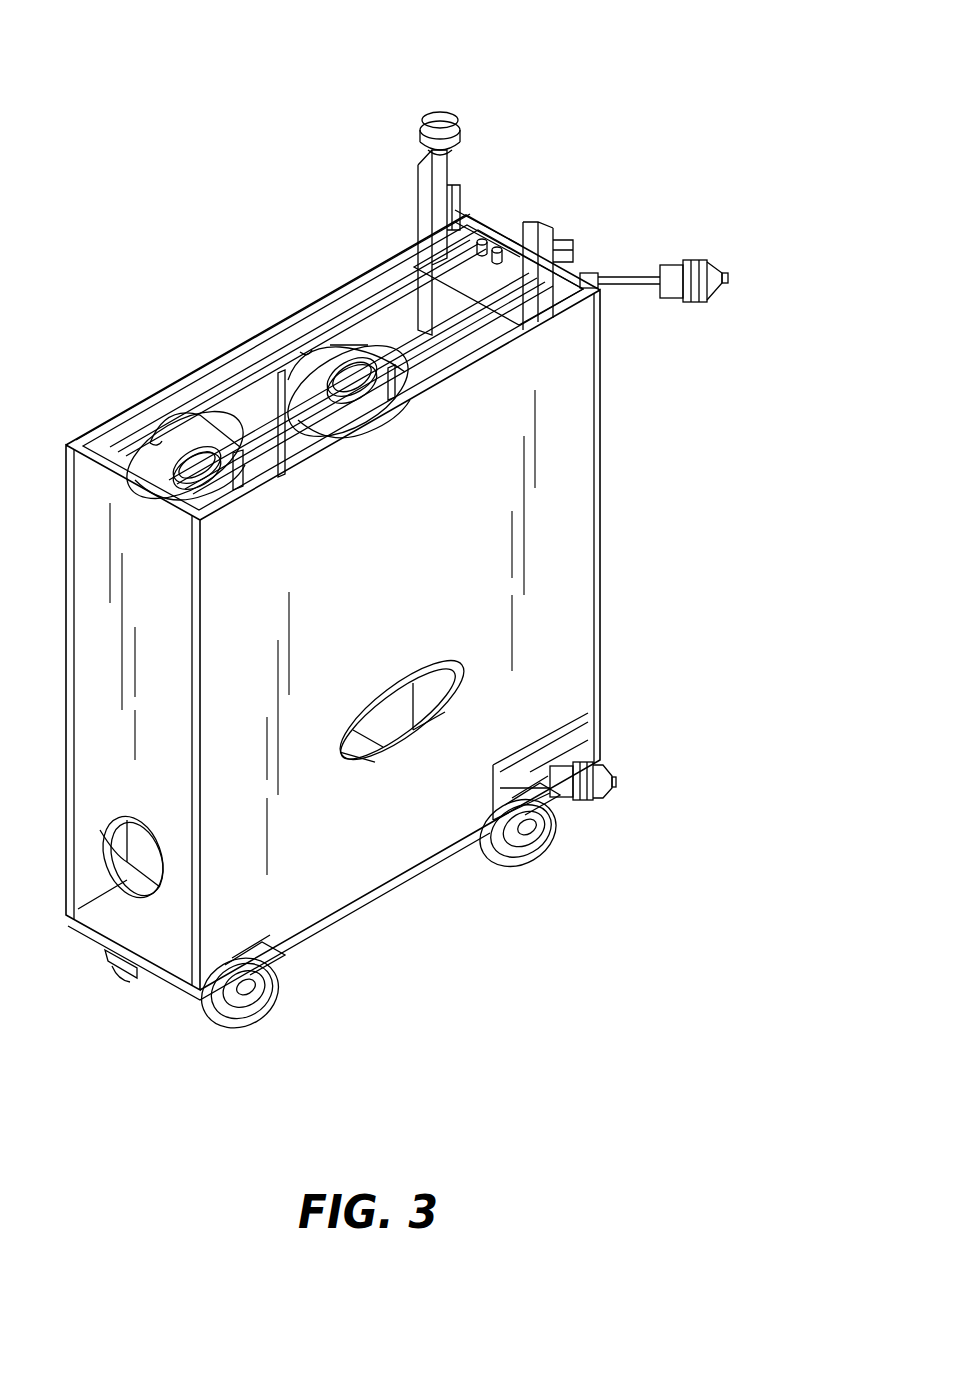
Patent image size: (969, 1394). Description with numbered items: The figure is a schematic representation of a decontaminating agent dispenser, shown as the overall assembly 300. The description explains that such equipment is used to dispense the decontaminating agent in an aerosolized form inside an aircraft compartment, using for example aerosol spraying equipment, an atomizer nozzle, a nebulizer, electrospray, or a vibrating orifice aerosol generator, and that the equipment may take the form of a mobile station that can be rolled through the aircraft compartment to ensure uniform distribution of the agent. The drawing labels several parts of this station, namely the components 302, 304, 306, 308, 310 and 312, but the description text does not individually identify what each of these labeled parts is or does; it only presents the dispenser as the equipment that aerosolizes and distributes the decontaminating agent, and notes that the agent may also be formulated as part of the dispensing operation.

The cart assembly 300 is at (553, 100).
The caster 302 is at (217, 1020).
The first holder clamp 304 is at (150, 443).
The second holder clamp 306 is at (342, 357).
The post 308 is at (417, 130).
The upper handle 310 is at (713, 297).
The lower handle 312 is at (612, 790).